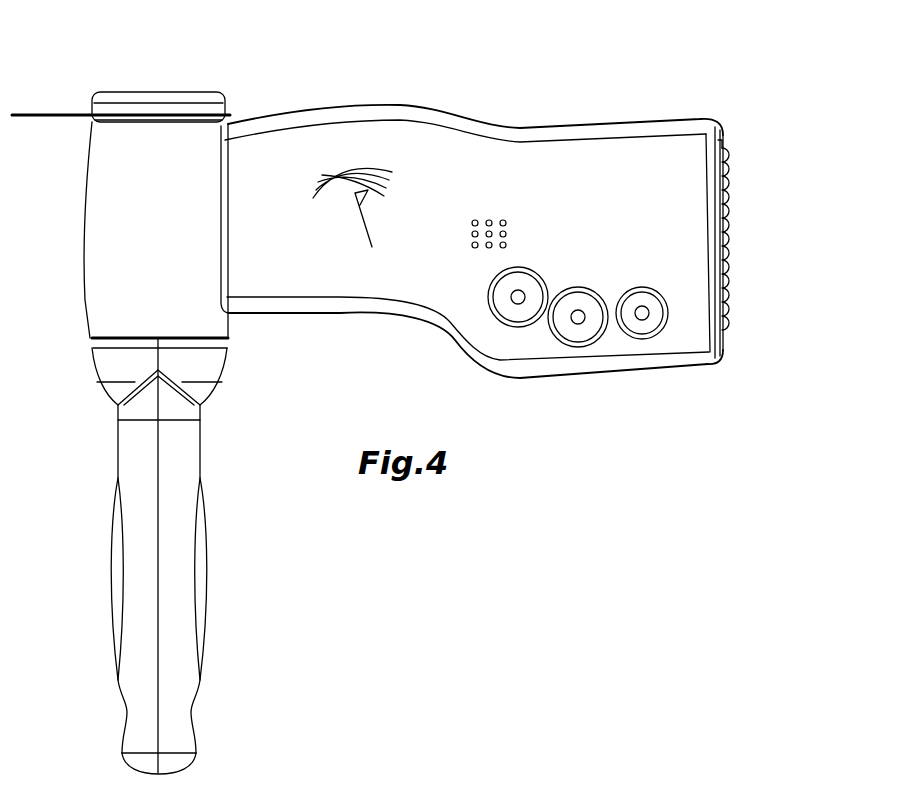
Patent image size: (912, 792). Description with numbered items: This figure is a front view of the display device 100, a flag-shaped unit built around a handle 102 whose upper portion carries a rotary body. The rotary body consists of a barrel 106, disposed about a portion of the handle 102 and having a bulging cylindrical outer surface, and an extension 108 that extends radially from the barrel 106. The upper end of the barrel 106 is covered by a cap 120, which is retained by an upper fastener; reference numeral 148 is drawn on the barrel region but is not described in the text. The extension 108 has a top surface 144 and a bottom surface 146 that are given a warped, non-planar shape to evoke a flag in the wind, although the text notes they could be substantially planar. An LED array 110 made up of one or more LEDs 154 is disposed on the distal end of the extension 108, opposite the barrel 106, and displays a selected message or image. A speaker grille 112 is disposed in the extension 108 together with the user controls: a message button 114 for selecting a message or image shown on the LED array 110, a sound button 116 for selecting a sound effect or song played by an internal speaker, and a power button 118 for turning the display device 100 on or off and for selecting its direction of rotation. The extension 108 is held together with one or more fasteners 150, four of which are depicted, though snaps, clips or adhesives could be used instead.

The display device 100 is at (540, 63).
The handle 102 is at (140, 563).
The barrel 106 is at (107, 242).
The extension 108 is at (473, 315).
The LED array 110 is at (731, 150).
The speaker grille 112 is at (488, 218).
The message button 114 is at (518, 304).
The sound button 116 is at (578, 324).
The power button 118 is at (642, 320).
The cap 120 is at (158, 98).
The top surface 144 is at (398, 108).
The bottom surface 146 is at (348, 306).
The flag pole slot 148 is at (115, 177).
The fasteners 150 is at (638, 152).
The LEDs 154 is at (727, 170).